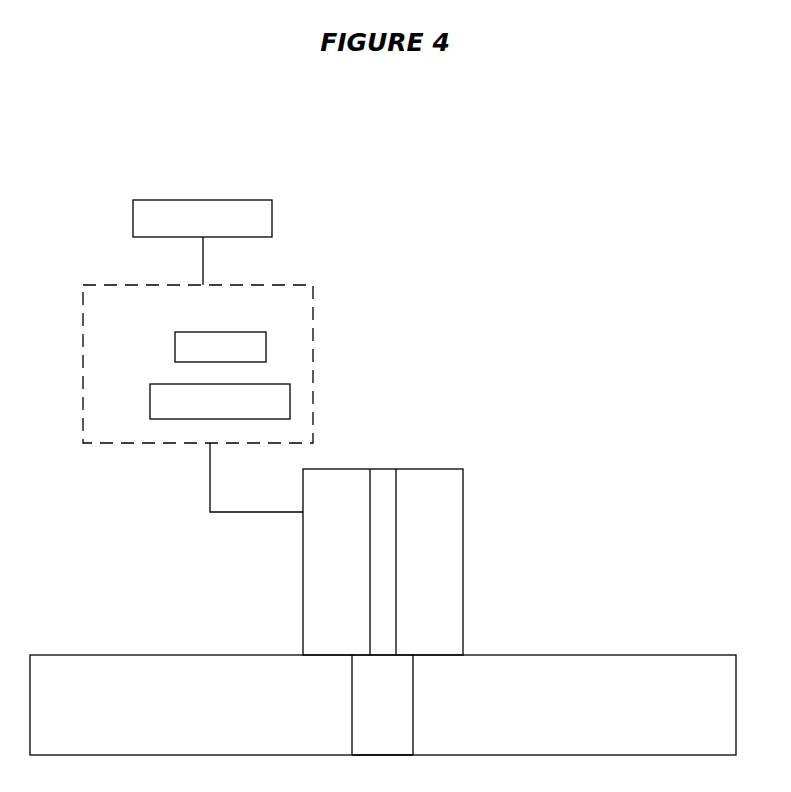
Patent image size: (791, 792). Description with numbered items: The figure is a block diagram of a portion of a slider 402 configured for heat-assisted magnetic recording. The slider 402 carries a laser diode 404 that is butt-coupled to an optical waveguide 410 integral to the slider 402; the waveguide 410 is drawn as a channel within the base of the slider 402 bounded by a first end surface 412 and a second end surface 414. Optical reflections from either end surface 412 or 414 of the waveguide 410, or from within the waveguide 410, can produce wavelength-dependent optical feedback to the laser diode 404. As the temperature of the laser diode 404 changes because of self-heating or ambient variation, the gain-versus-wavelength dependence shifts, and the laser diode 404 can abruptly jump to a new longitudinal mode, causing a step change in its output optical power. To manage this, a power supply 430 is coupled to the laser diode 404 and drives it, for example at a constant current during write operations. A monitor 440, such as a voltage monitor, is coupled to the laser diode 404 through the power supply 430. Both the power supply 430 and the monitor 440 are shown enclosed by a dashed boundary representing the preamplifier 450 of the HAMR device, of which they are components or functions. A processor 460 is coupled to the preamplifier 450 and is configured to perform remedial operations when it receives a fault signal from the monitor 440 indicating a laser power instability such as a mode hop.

The slider 402 is at (95, 664).
The laser diode 404 is at (432, 469).
The optical waveguide 410 is at (352, 692).
The end surface of the waveguide 412 is at (403, 656).
The end surface of the waveguide 414 is at (390, 755).
The power supply 430 is at (150, 406).
The monitor 440 is at (175, 349).
The preamplifier 450 is at (113, 285).
The processor 460 is at (180, 200).